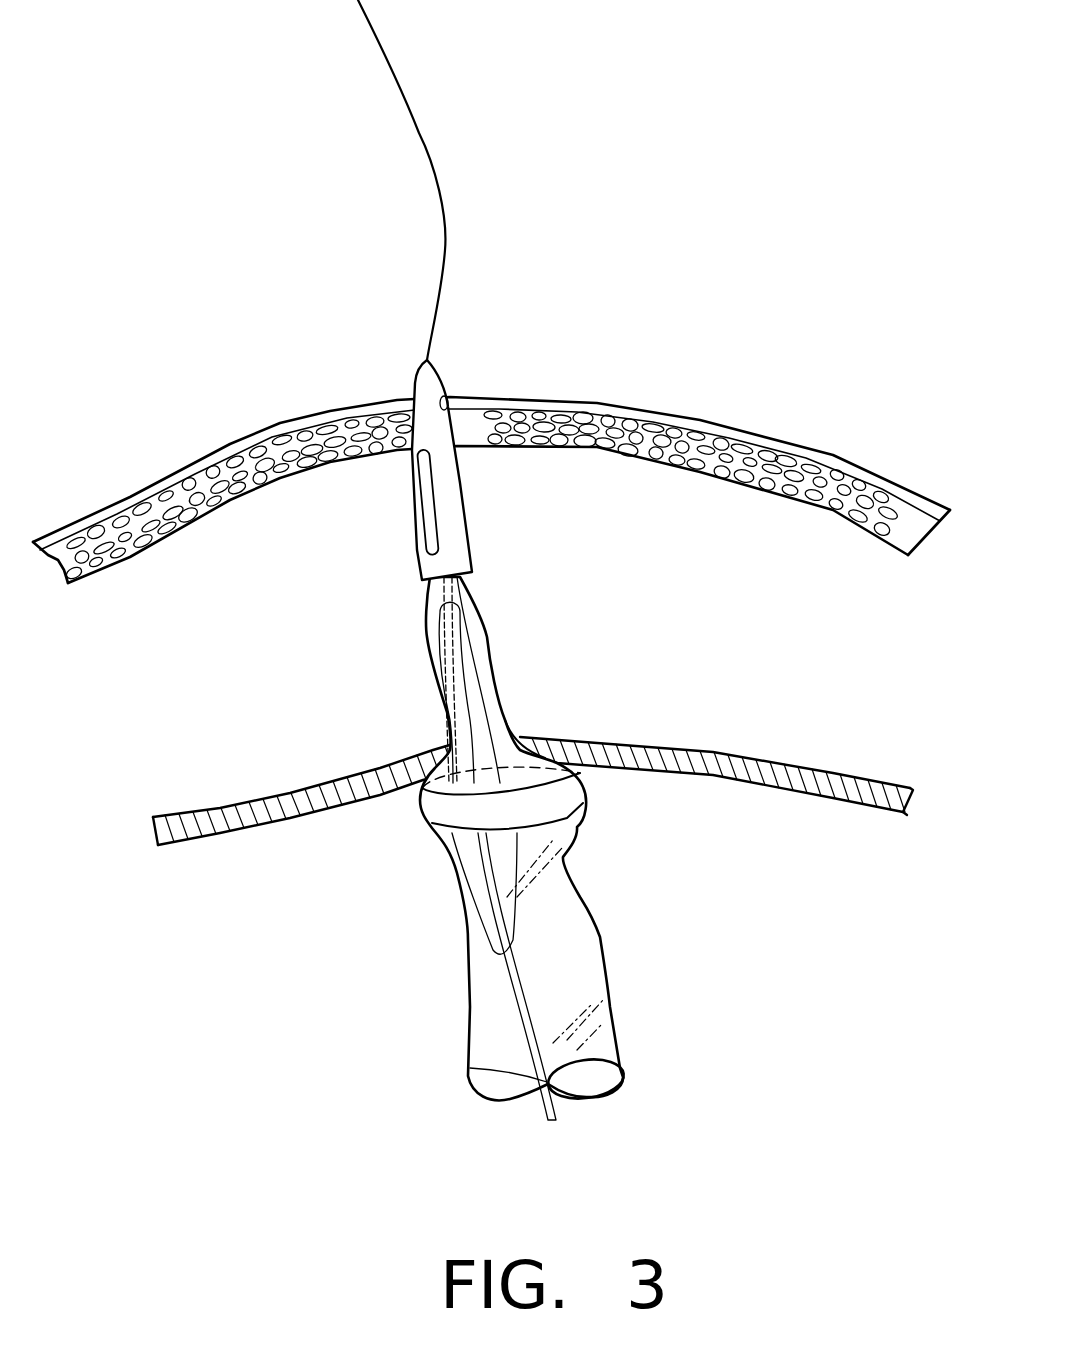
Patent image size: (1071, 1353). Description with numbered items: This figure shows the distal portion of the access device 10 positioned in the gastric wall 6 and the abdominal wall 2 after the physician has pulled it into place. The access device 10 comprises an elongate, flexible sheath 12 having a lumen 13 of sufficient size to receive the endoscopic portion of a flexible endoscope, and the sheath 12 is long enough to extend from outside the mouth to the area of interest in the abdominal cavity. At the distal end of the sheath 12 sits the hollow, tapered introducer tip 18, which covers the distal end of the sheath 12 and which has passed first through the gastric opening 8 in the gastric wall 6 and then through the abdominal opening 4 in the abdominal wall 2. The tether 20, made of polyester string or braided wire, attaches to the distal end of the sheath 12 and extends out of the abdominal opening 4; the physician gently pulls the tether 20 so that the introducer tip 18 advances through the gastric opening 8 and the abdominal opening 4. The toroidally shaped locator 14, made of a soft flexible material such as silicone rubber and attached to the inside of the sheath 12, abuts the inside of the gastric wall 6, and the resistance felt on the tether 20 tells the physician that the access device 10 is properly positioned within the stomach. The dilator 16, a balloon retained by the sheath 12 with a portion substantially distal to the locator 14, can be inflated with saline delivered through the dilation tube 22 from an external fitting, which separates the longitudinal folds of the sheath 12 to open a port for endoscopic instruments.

The abdominal wall 2 is at (680, 410).
The abdominal opening 4 is at (492, 458).
The gastric wall 6 is at (712, 752).
The gastric opening 8 is at (508, 742).
The access device 10 is at (629, 862).
The sheath 12 is at (618, 1022).
The lumen 13 is at (593, 1085).
The locator 14 is at (590, 800).
The dilator 16 is at (484, 706).
The introducer tip 18 is at (470, 522).
The tether 20 is at (417, 135).
The dilation tube 22 is at (535, 1046).